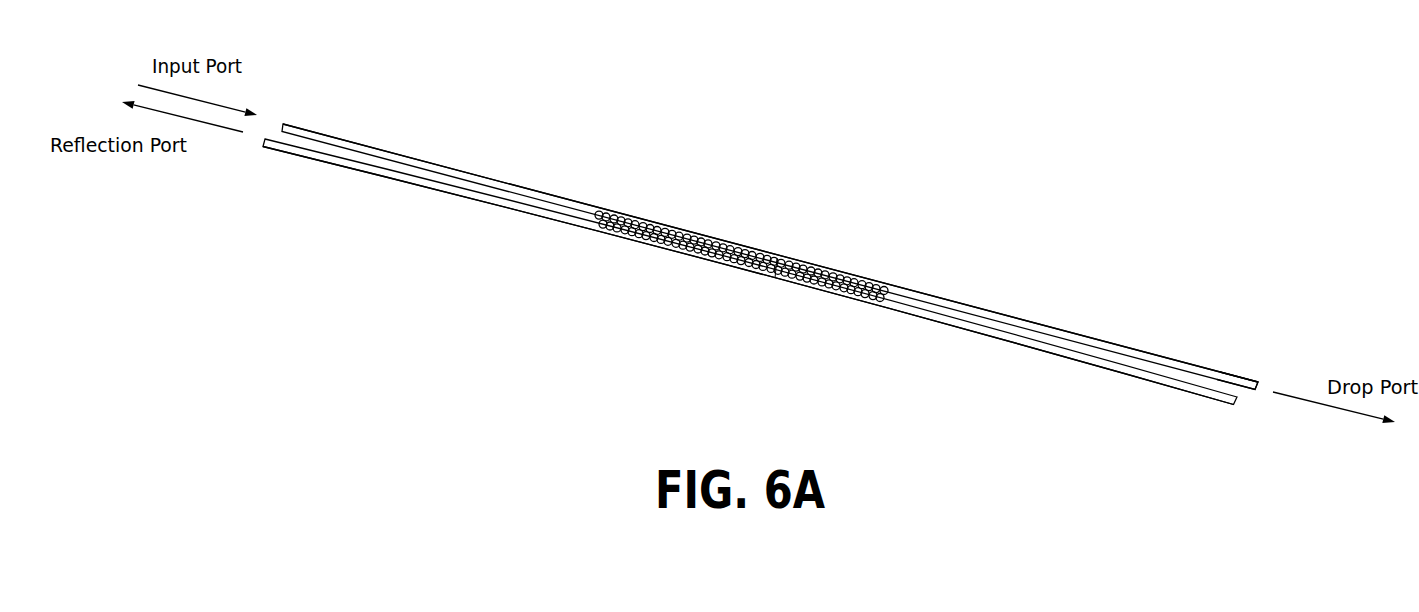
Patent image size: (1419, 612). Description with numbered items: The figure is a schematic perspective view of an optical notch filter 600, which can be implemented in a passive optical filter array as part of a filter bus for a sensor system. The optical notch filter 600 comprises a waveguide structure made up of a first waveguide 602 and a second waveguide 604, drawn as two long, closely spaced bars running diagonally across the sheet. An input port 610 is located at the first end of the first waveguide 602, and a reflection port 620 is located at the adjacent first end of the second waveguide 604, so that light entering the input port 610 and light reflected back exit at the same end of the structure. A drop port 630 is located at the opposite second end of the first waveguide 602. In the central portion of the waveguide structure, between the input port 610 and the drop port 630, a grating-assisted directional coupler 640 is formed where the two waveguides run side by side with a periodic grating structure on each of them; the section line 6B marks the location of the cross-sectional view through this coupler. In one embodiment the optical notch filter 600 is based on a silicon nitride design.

The optical notch filter 600 is at (554, 148).
The first waveguide 602 is at (433, 148).
The second waveguide 604 is at (476, 215).
The input port 610 is at (283, 122).
The reflection port 620 is at (265, 147).
The drop port 630 is at (1245, 390).
The grating-assisted directional coupler 640 is at (743, 247).
The section line 6B is at (777, 258).